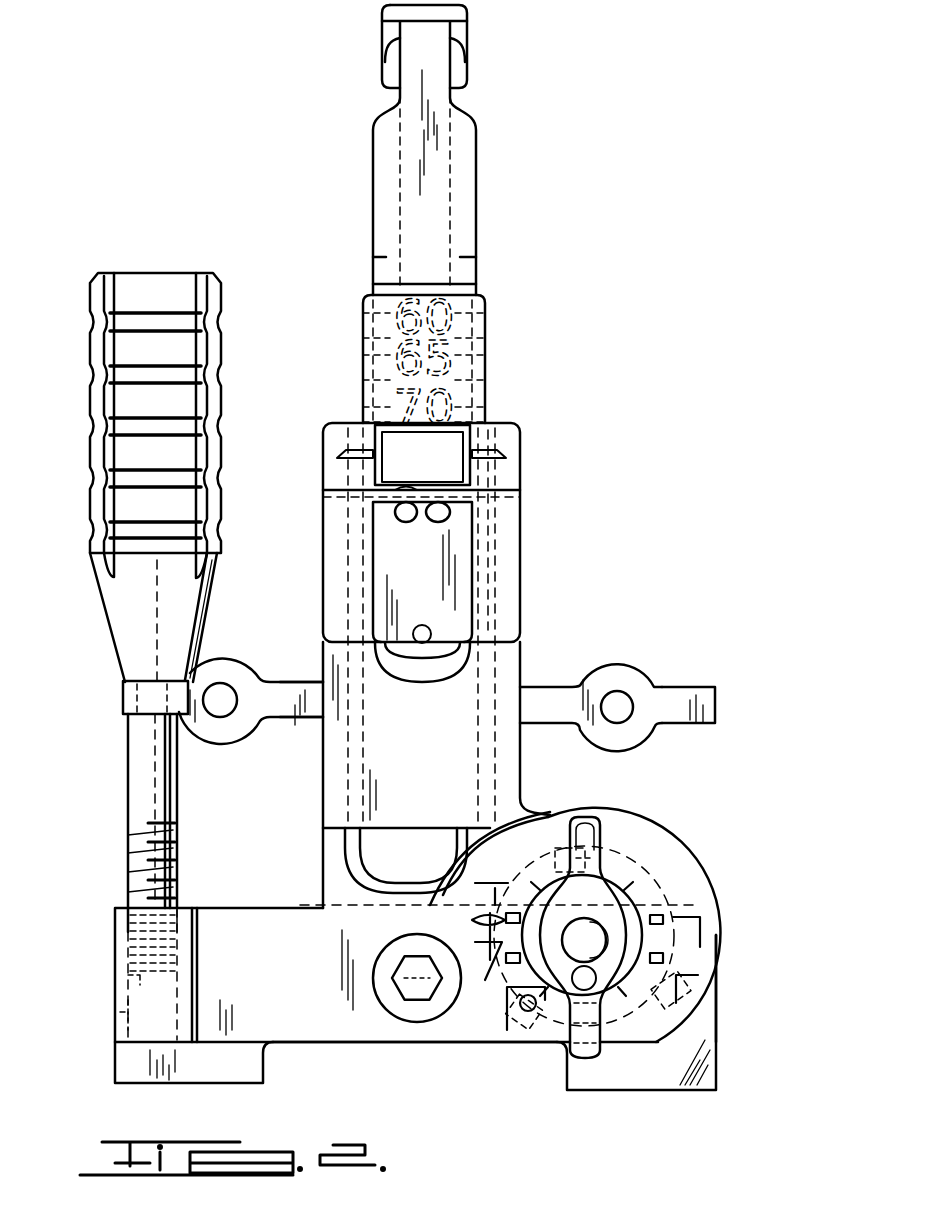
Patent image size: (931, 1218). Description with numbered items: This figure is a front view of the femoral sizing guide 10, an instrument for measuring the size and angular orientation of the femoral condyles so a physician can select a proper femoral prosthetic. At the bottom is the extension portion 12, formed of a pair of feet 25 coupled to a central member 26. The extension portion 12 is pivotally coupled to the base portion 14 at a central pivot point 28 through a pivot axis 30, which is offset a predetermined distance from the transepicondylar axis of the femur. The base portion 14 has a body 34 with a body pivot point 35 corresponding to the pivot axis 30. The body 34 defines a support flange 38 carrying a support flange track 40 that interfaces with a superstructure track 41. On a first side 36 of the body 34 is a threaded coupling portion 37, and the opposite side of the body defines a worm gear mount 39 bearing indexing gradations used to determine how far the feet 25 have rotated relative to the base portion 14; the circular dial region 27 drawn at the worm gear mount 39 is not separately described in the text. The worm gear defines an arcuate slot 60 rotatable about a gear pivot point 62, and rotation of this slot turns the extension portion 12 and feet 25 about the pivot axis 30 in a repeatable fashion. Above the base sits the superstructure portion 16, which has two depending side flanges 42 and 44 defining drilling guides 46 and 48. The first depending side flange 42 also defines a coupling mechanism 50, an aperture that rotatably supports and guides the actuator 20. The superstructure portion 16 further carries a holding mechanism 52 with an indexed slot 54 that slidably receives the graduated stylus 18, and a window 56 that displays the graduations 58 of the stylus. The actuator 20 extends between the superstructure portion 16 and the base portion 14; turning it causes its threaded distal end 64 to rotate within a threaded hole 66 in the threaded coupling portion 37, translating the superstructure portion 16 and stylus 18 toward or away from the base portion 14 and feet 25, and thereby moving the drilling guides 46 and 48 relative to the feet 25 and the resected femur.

The femoral sizing guide 10 is at (614, 297).
The extension portion 12 is at (708, 1027).
The base portion 14 is at (247, 910).
The superstructure portion 16 is at (522, 441).
The graduated stylus 18 is at (470, 175).
The actuator 20 is at (89, 458).
The feet 25 is at (118, 1065).
The central member 26 is at (310, 1027).
The dial 27 is at (640, 832).
The central pivot point 28 is at (415, 992).
The pivot axis 30 is at (400, 975).
The body 34 is at (710, 1000).
The body pivot point 35 is at (430, 985).
The first side 36 is at (117, 962).
The threaded coupling portion 37 is at (117, 935).
The support flange 38 is at (508, 532).
The worm gear mount 39 is at (680, 868).
The support flange track 40 is at (490, 580).
The superstructure track 41 is at (515, 435).
The first depending side flange 42 is at (297, 714).
The second depending side flange 44 is at (693, 698).
The drilling guide 46 is at (235, 672).
The drilling guide 48 is at (622, 676).
The coupling mechanism 50 is at (123, 697).
The holding mechanism 52 is at (490, 425).
The indexed slot 54 is at (373, 438).
The window 56 is at (457, 482).
The graduations 58 is at (465, 252).
The arcuate slot 60 is at (553, 1060).
The gear pivot point 62 is at (596, 945).
The threaded distal end 64 is at (125, 975).
The threaded hole 66 is at (115, 1012).